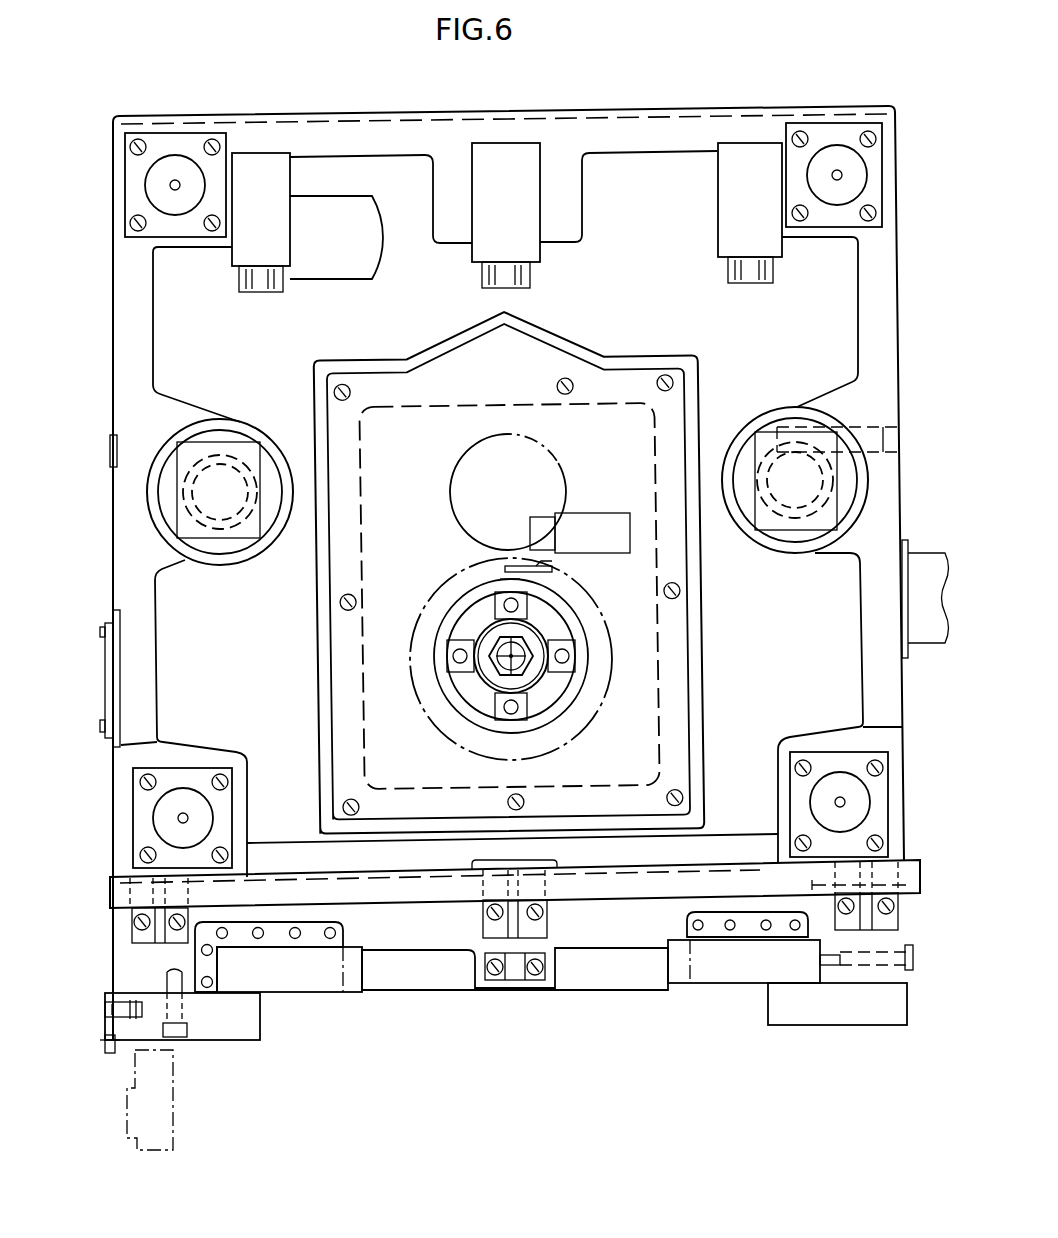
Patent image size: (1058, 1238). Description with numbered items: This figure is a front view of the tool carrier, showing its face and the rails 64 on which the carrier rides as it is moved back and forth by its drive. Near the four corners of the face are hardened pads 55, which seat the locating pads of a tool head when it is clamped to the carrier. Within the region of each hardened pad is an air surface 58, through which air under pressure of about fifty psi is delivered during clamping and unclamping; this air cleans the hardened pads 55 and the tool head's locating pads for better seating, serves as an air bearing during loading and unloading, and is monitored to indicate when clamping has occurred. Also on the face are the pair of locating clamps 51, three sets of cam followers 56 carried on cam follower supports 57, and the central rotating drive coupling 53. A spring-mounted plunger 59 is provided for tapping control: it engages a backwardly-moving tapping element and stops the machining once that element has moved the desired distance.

The locating clamps 51 is at (250, 440).
The rotating drive coupling 53 is at (565, 640).
The hardened pads 55 is at (140, 197).
The cam followers 56 is at (255, 290).
The cam follower supports 57 is at (270, 170).
The air surfaces 58 is at (175, 182).
The plunger 59 is at (365, 265).
The rails 64 is at (283, 992).